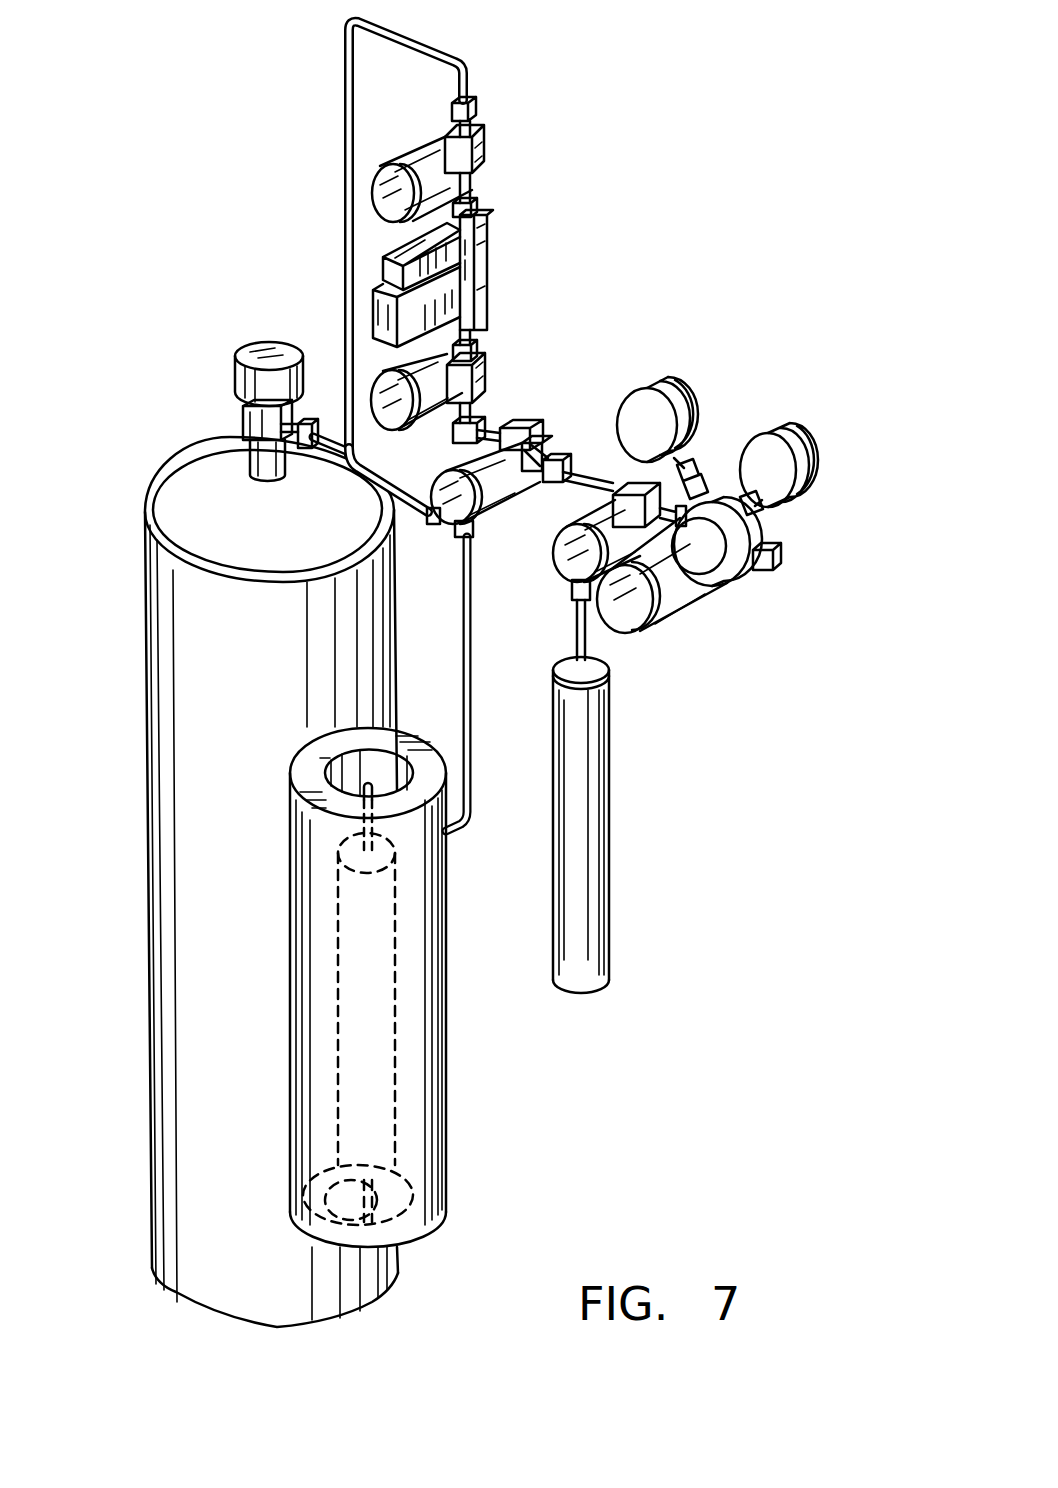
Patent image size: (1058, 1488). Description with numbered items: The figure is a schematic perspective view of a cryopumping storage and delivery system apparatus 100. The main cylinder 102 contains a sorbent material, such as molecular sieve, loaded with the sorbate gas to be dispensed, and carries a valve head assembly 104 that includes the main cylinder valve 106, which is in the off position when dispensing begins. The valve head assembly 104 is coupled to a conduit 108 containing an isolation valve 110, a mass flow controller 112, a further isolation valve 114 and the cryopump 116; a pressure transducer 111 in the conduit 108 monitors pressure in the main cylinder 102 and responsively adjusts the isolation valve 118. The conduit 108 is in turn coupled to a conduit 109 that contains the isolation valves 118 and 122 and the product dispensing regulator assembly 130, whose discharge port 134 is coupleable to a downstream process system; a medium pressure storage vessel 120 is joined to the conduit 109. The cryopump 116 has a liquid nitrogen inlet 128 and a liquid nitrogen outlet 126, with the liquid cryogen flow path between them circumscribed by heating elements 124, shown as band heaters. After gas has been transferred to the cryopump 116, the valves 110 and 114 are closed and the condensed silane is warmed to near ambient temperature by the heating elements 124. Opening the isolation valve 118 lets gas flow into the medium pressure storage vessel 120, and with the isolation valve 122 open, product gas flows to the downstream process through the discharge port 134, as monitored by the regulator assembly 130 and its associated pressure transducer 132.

The cryopumping storage and delivery system apparatus 100 is at (190, 186).
The main cylinder 102 is at (158, 747).
The valve head assembly 104 is at (222, 407).
The main cylinder valve 106 is at (235, 374).
The conduit 108 is at (345, 135).
The conduit 109 is at (485, 433).
The isolation valve 110 is at (448, 164).
The pressure transducer 111 is at (418, 497).
The mass flow controller 112 is at (450, 300).
The isolation valve 114 is at (453, 380).
The cryopump 116 is at (447, 1088).
The isolation valve 118 is at (517, 437).
The medium pressure storage vessel 120 is at (595, 913).
The isolation valve 122 is at (565, 560).
The heating elements 124 is at (397, 1113).
The liquid nitrogen outlet 126 is at (397, 1213).
The liquid nitrogen inlet 128 is at (327, 762).
The product dispensing regulator assembly 130 is at (855, 591).
The pressure transducer 132 is at (627, 623).
The discharge port 134 is at (758, 567).